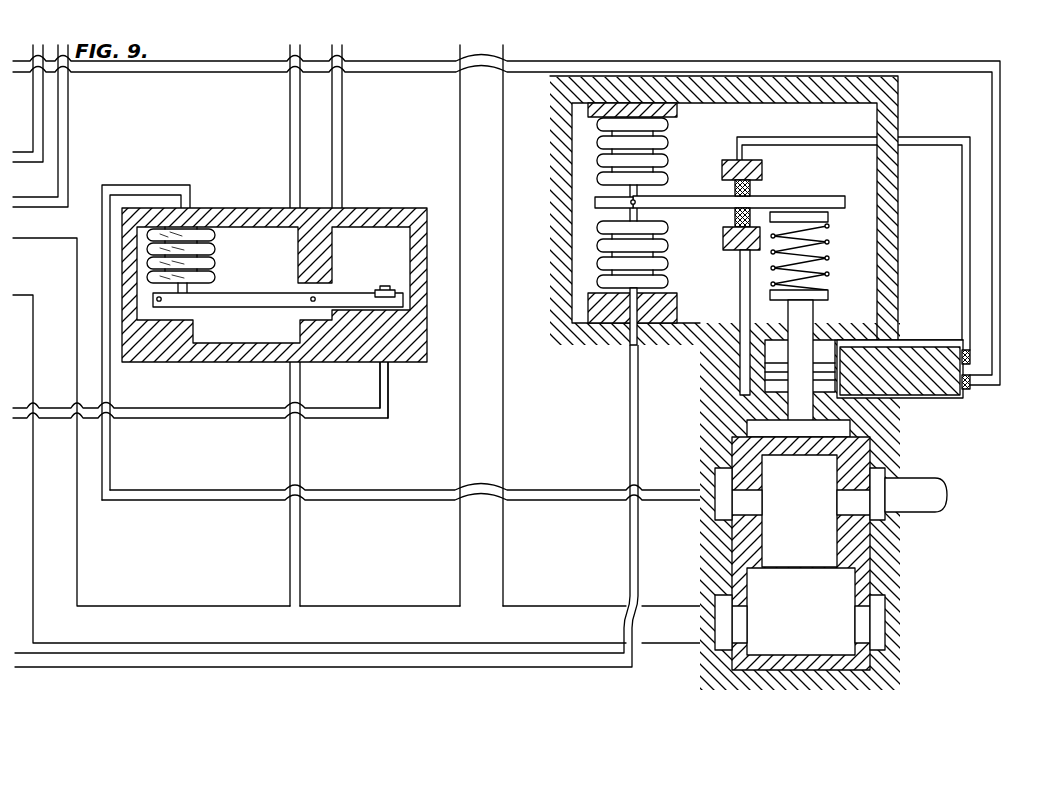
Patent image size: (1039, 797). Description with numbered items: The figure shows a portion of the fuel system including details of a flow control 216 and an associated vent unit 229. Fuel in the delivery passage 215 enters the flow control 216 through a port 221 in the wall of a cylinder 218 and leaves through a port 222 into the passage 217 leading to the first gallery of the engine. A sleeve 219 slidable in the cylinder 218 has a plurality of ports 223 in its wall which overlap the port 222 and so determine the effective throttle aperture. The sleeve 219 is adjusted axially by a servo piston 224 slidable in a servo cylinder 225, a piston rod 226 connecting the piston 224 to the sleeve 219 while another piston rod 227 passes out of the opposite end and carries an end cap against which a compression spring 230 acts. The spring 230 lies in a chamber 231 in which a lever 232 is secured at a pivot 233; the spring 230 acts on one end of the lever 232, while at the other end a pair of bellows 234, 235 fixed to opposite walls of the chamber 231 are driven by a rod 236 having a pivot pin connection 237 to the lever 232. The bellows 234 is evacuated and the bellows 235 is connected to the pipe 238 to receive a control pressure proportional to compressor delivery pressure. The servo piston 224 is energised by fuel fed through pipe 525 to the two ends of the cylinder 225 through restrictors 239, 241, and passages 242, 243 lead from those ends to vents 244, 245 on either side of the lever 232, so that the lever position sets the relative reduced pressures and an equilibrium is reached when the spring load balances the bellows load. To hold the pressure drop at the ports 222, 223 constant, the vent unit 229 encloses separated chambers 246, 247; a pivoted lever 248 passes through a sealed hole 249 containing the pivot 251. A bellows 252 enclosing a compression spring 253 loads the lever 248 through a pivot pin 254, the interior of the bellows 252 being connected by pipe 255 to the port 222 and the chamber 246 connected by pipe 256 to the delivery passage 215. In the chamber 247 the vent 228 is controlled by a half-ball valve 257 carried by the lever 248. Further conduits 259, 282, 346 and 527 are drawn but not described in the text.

The delivery passage 215 is at (37, 263).
The flow control 216 is at (831, 553).
The passage 217 is at (916, 504).
The cylinder 218 is at (852, 585).
The sleeve 219 is at (840, 449).
The port 221 is at (740, 633).
The port 222 is at (860, 502).
The ports 223 is at (756, 519).
The servo piston 224 is at (884, 362).
The servo cylinder 225 is at (766, 352).
The piston rod 226 is at (822, 414).
The piston rod 227 is at (808, 312).
The vent 228 is at (388, 320).
The vent unit 229 is at (286, 260).
The compression spring 230 is at (822, 249).
The chamber 231 is at (756, 383).
The lever 232 is at (830, 194).
The pivot 233 is at (707, 200).
The bellows 234 is at (600, 136).
The bellows 235 is at (606, 259).
The rod 236 is at (598, 203).
The pivot pin connection 237 is at (630, 204).
The pipe 238 is at (138, 666).
The restrictor 239 is at (968, 392).
The restrictor 241 is at (961, 350).
The passage 242 is at (735, 396).
The passage 243 is at (961, 240).
The vent 244 is at (737, 229).
The vent 245 is at (752, 190).
The chamber 246 is at (285, 228).
The chamber 247 is at (352, 226).
The pivoted lever 248 is at (259, 297).
The sealed hole 249 is at (302, 315).
The pivot 251 is at (316, 297).
The bellows 252 is at (206, 241).
The compression spring 253 is at (176, 235).
The pivot pin 254 is at (163, 300).
The pipe 255 is at (110, 389).
The pipe 256 is at (292, 104).
The half-ball valve 257 is at (384, 290).
The conduit 259 is at (466, 100).
The conduit 282 is at (40, 101).
The conduit 346 is at (62, 125).
The pipe 525 is at (995, 100).
The conduit 527 is at (152, 419).